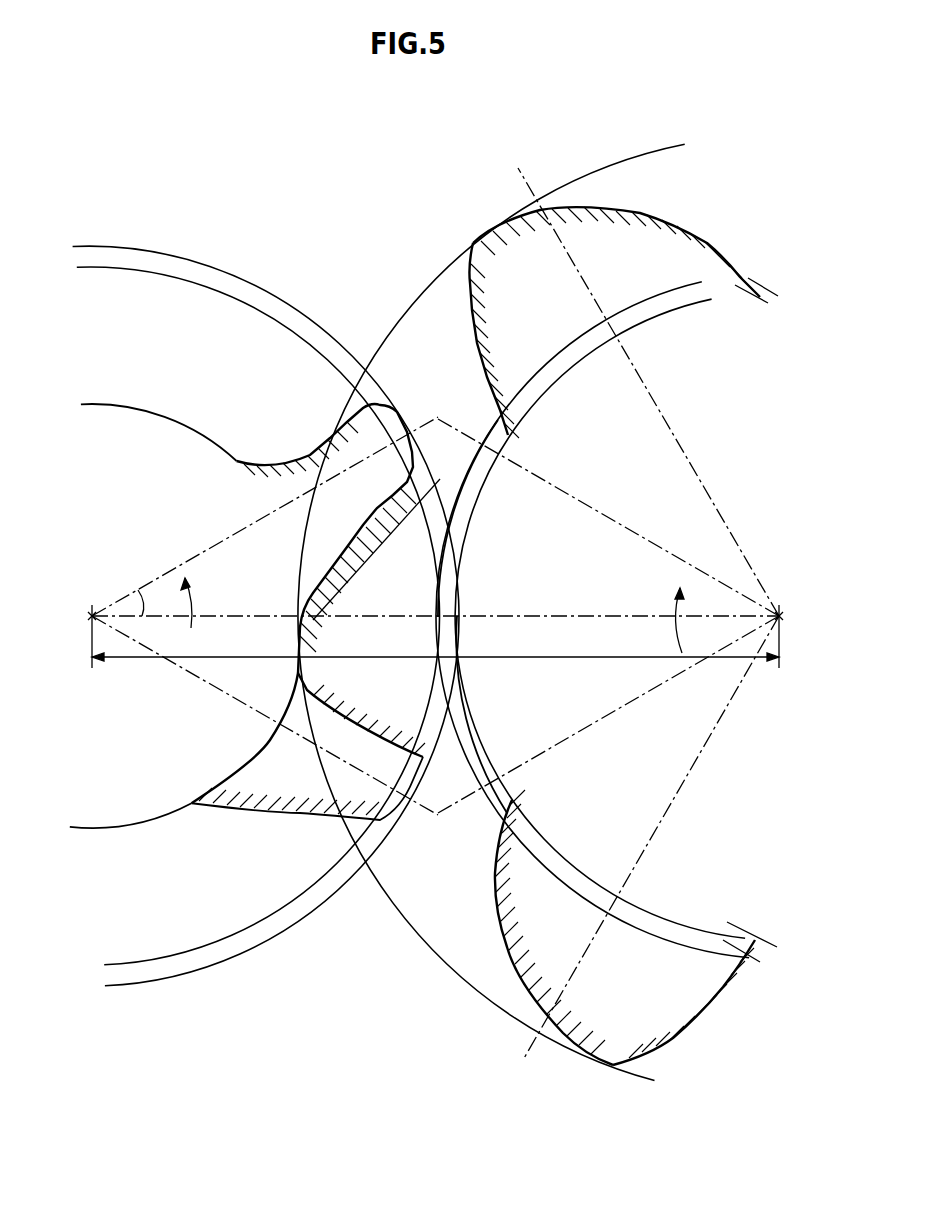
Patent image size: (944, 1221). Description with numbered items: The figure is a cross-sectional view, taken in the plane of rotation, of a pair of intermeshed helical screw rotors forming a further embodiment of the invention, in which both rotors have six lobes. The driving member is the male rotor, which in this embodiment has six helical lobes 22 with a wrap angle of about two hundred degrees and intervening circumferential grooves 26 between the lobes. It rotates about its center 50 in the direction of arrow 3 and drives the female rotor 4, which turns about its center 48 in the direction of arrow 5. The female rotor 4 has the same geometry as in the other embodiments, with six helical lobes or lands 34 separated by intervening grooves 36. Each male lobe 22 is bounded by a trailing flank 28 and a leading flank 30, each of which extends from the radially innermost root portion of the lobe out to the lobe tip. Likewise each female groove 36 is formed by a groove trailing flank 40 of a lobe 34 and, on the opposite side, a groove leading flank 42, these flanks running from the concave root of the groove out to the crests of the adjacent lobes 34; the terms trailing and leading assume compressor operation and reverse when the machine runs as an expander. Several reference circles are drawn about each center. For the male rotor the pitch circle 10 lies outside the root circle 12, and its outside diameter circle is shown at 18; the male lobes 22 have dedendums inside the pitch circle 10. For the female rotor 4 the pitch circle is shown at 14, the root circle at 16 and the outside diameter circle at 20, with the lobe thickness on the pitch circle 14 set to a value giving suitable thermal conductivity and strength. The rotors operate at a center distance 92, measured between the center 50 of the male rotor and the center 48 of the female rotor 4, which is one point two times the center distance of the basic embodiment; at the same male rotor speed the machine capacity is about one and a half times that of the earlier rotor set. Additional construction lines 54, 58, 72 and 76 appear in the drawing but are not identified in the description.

The arrow 3 is at (678, 590).
The helical screw female rotor 4 is at (300, 305).
The arrow 5 is at (195, 606).
The pitch circle 10 is at (653, 937).
The root circle 12 is at (637, 903).
The pitch circle 14 is at (285, 905).
The root circle 16 is at (177, 425).
The outside diameter circle 18 is at (625, 140).
The outside diameter circle 20 is at (245, 233).
The male rotor lobe 22 is at (399, 600).
The groove 26 is at (596, 632).
The trailing flank 28 is at (472, 343).
The leading flank 30 is at (462, 477).
The female rotor lobe 34 is at (305, 770).
The groove 36 is at (270, 405).
The groove trailing flank 40 is at (287, 460).
The groove leading flank 42 is at (430, 477).
The center 48 is at (91, 614).
The center 50 is at (783, 613).
The tooth center line of first gear 54 is at (241, 530).
The half tooth angle 58 is at (155, 602).
The tooth center line of second gear 72 is at (651, 393).
The tooth center line of second gear 76 is at (673, 556).
The center distance 92 is at (435, 636).